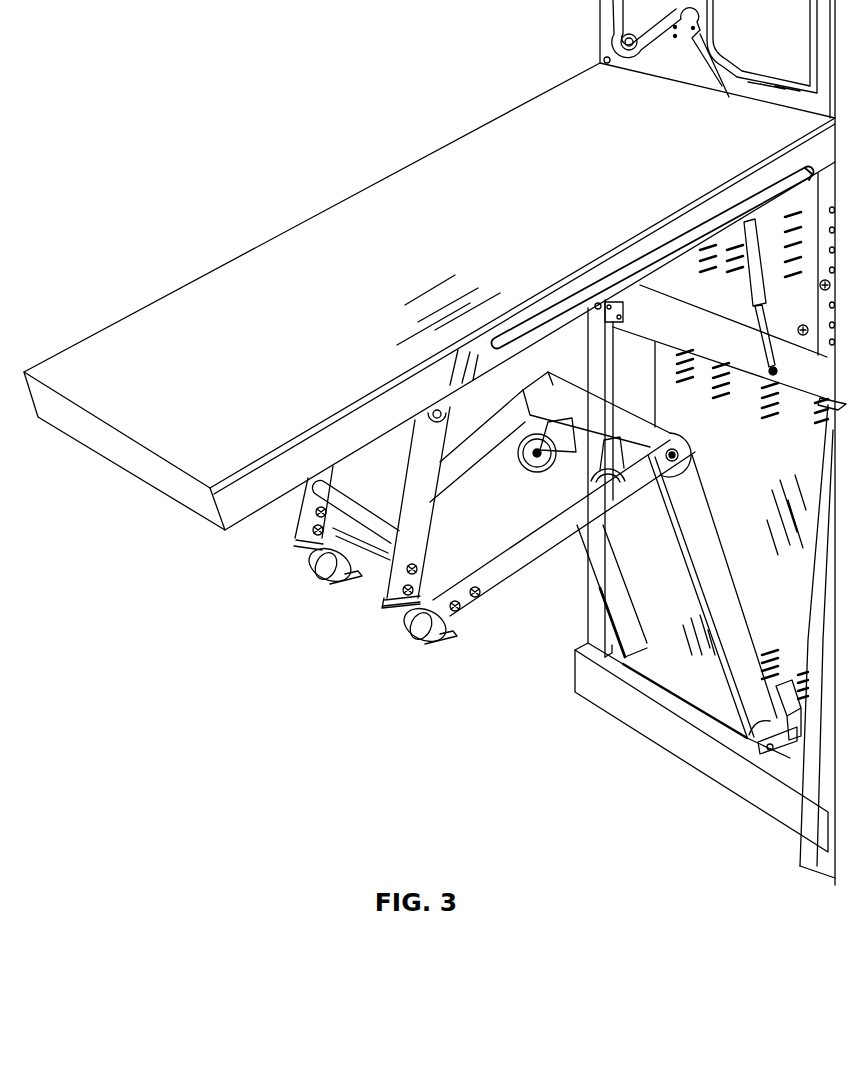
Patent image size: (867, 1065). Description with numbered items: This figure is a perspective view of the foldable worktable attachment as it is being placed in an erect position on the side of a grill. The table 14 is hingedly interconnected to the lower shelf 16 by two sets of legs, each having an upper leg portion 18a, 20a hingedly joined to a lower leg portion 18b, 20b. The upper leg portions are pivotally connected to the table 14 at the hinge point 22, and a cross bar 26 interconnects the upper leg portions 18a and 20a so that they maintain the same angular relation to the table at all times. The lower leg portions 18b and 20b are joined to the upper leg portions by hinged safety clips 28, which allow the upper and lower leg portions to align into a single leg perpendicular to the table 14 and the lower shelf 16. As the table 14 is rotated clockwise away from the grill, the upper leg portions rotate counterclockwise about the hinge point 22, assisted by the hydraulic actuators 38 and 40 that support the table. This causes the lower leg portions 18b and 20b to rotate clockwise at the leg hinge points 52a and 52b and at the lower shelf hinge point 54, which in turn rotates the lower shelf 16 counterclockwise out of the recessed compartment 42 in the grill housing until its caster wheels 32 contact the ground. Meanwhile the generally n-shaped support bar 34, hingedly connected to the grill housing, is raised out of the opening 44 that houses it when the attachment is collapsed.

The table 14 is at (297, 237).
The lower shelf 16 is at (738, 653).
The upper leg portion 18a is at (417, 535).
The lower leg portion 18b is at (500, 576).
The upper leg portion 20a is at (307, 510).
The lower leg portion 20b is at (452, 477).
The hinge point 22 is at (447, 404).
The cross bar 26 is at (358, 507).
The hinged safety clip 28 is at (300, 565).
The caster wheel 32 is at (593, 452).
The support bar 34 is at (790, 752).
The actuator 38 is at (749, 278).
The actuator 40 is at (622, 305).
The recessed compartment 42 is at (756, 587).
The opening 44 is at (747, 737).
The leg hinge point 52a is at (403, 623).
The leg hinge point 52b is at (307, 560).
The lower shelf hinge point 54 is at (690, 466).